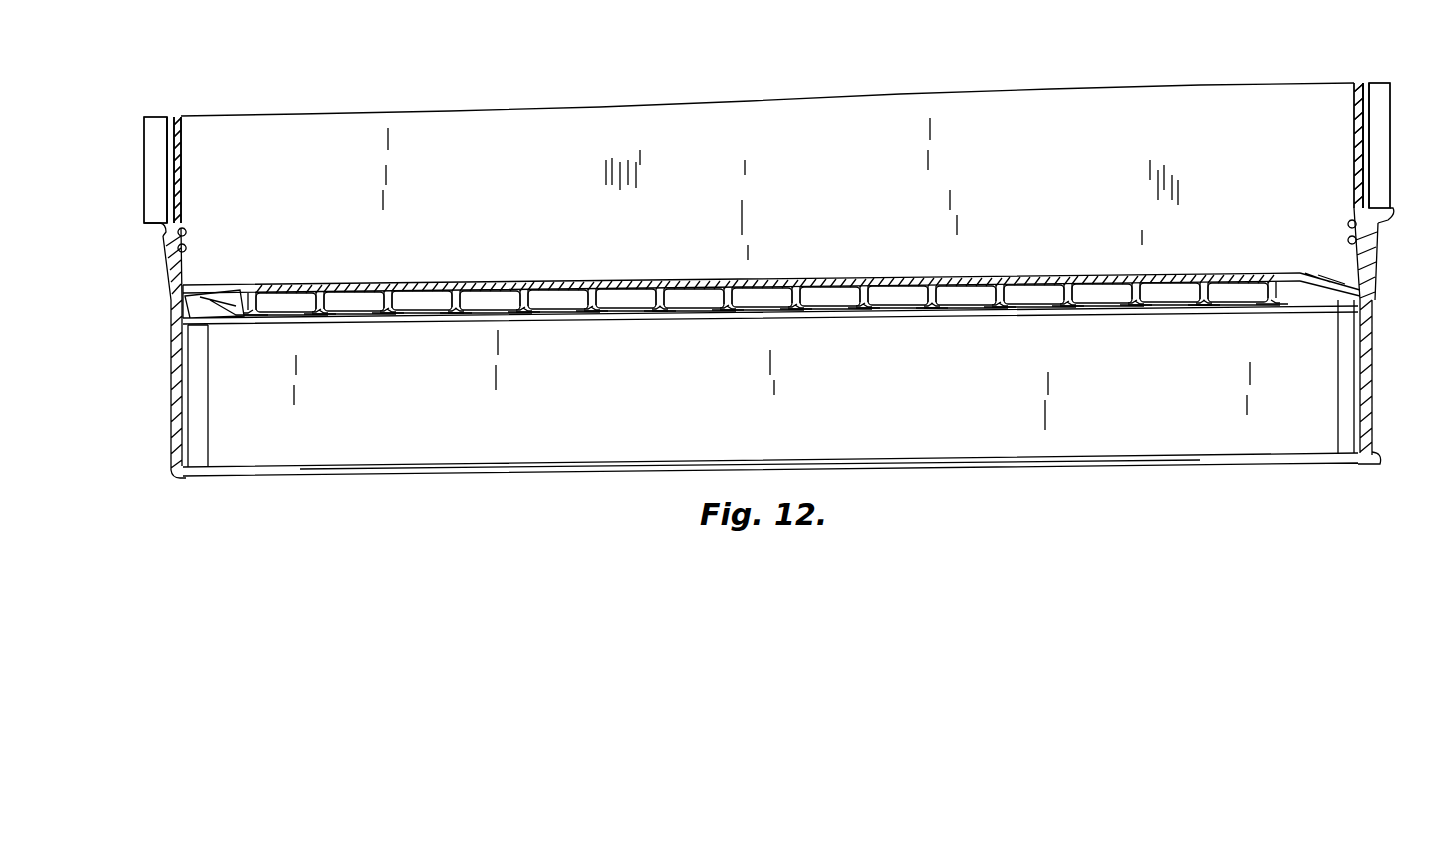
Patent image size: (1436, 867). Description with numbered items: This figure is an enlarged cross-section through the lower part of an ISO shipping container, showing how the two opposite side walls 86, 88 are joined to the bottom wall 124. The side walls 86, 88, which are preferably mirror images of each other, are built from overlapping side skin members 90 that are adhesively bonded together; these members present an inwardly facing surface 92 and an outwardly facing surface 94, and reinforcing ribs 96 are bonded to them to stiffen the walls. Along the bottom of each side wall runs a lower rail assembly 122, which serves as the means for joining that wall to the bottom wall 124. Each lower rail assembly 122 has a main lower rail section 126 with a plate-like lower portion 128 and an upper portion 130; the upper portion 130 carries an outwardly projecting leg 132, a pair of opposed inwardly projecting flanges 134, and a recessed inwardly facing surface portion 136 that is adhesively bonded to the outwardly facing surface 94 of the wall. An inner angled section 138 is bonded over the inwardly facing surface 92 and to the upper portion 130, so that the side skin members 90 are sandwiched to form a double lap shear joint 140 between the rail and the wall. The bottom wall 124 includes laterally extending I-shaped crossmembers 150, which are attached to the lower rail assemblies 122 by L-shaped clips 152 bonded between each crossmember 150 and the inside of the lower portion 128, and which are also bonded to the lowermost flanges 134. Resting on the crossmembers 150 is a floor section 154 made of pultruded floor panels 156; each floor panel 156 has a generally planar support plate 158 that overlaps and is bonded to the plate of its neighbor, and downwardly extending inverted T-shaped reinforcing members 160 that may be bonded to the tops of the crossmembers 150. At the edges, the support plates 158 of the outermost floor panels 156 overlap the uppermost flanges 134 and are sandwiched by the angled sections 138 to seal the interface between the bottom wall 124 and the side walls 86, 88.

The side wall 86 is at (130, 184).
The side wall 88 is at (1398, 122).
The side skin member 90 is at (184, 161).
The inwardly facing surface 92 is at (183, 183).
The outwardly facing surface 94 is at (180, 148).
The reinforcing rib 96 is at (156, 114).
The lower rail assembly 122 is at (758, 336).
The bottom wall 124 is at (762, 274).
The main lower rail section 126 is at (170, 425).
The lower portion 128 is at (178, 450).
The upper portion 130 is at (172, 300).
The outwardly projecting leg 132 is at (148, 223).
The inwardly projecting flange 134 is at (216, 312).
The recessed inwardly facing surface portion 136 is at (165, 251).
The inner angled section 138 is at (190, 262).
The double lap shear joint 140 is at (202, 228).
The crossmember 150 is at (396, 478).
The L-shaped clip 152 is at (200, 411).
The floor section 154 is at (612, 268).
The floor panel 156 is at (406, 278).
The support plate 158 is at (440, 283).
The reinforcing member 160 is at (446, 313).